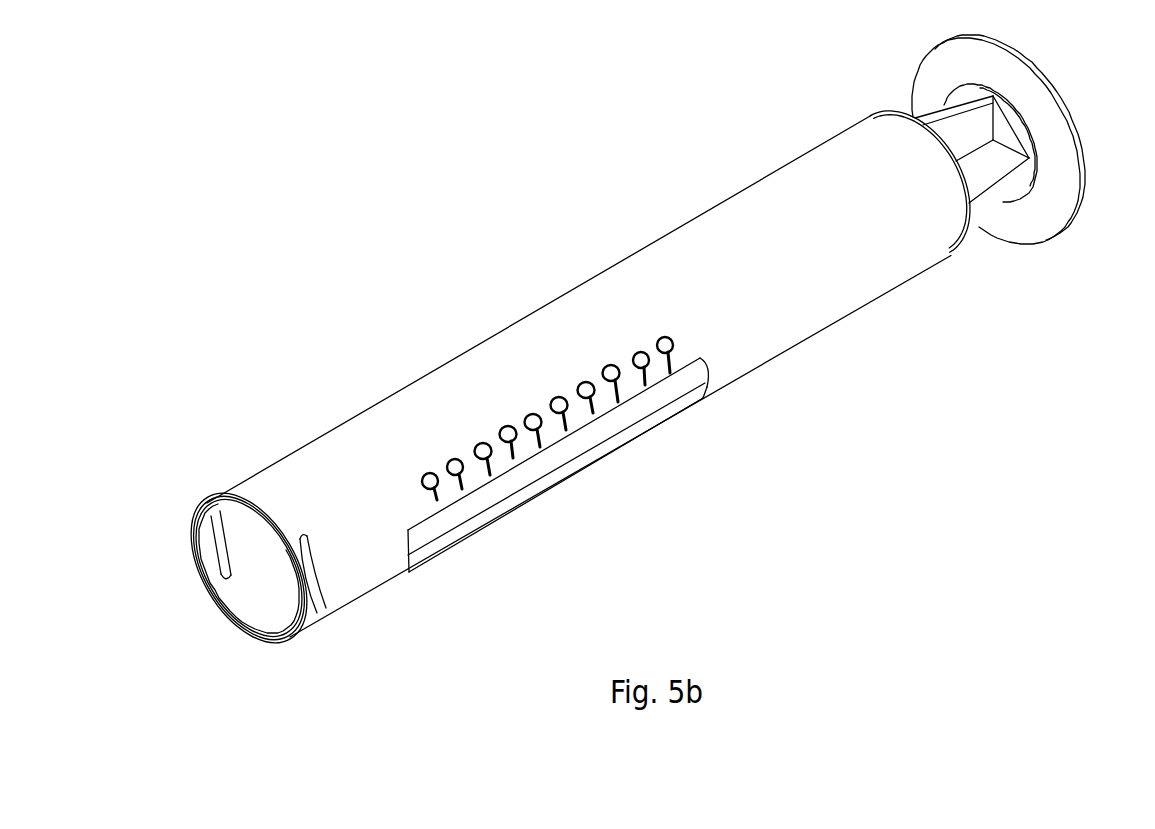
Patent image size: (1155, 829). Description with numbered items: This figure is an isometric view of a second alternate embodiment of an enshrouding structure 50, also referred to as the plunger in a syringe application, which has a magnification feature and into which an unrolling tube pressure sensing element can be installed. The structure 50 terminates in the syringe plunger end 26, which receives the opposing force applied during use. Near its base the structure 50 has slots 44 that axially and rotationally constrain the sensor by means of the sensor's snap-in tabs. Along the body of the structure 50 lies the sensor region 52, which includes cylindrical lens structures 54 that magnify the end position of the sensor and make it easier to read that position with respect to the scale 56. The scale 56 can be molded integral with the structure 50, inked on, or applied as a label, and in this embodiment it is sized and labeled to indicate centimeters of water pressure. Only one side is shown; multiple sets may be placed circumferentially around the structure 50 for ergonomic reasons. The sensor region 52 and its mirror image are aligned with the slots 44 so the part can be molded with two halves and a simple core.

The syringe plunger end 26 is at (1043, 185).
The slots 44 is at (323, 608).
The enshrouding structure 50 is at (535, 343).
The sensor region 52 is at (636, 472).
The cylindrical lens structures 54 is at (683, 382).
The scale 56 is at (496, 398).